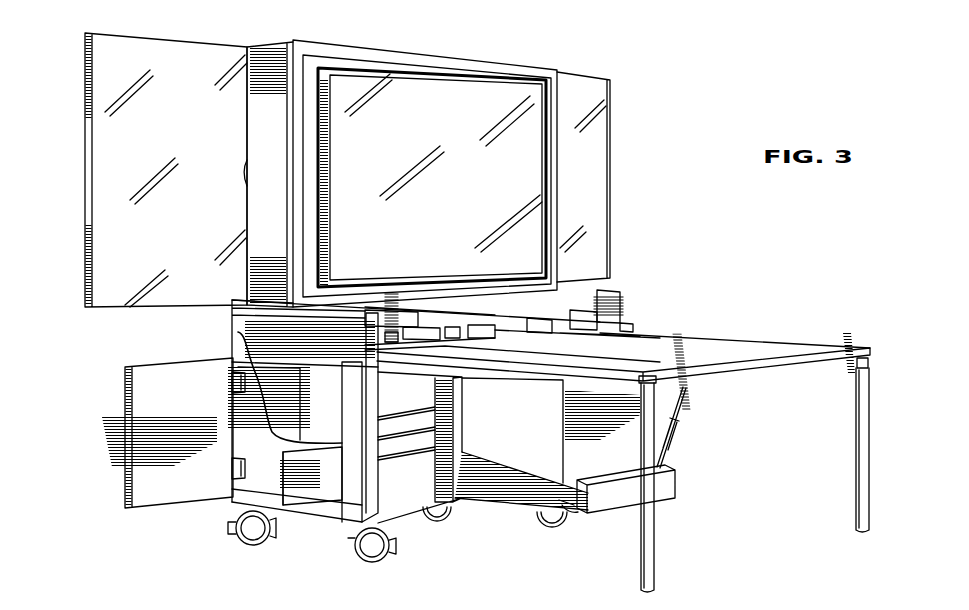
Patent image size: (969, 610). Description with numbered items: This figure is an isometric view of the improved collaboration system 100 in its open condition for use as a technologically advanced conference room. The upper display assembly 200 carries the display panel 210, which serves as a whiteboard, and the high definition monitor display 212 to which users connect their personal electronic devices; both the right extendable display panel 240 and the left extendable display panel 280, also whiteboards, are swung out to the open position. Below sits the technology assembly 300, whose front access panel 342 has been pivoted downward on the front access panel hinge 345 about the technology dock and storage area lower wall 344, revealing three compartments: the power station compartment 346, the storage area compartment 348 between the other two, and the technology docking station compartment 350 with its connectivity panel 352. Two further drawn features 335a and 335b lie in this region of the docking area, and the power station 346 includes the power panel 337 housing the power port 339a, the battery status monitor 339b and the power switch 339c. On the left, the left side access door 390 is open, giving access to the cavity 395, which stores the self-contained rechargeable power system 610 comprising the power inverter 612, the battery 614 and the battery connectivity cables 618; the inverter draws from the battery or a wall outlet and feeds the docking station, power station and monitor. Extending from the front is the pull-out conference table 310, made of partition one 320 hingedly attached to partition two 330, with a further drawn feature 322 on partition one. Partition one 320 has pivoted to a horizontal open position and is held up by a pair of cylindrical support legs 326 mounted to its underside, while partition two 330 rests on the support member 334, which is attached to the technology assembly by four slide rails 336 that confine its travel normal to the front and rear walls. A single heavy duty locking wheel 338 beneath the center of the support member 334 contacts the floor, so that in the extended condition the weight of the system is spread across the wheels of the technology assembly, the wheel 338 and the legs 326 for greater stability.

The improved collaboration system 100 is at (747, 86).
The display assembly 200 is at (654, 152).
The display panel 210 is at (308, 82).
The high definition monitor display 212 is at (487, 92).
The extendable display panel 240 is at (592, 95).
The extendable display panel 280 is at (125, 302).
The technology assembly 300 is at (805, 332).
The pull-out conference table 310 is at (513, 376).
The partition one 320 is at (754, 348).
The front table leg 322 is at (697, 363).
The support legs 326 is at (855, 503).
The partition two 330 is at (700, 342).
The support member 334 is at (540, 493).
The connector port 335a is at (590, 328).
The connector port 335b is at (575, 325).
The slide rails 336 is at (475, 483).
The power panel 337 is at (466, 328).
The locking wheel 338 is at (572, 513).
The power port 339a is at (453, 327).
The battery status monitor 339b is at (420, 328).
The power switch 339c is at (390, 333).
The front access panel 342 is at (573, 338).
The technology dock and storage area lower wall 344 is at (560, 355).
The front access panel hinge 345 is at (588, 325).
The power station compartment 346 is at (358, 334).
The storage area compartment 348 is at (545, 322).
The technology docking station compartment 350 is at (560, 322).
The connectivity panel 352 is at (605, 325).
The left side access door 390 is at (153, 483).
The cavity 395 is at (238, 332).
The self-contained rechargeable power system 610 is at (335, 483).
The power inverter 612 is at (300, 488).
The battery 614 is at (341, 418).
The battery connectivity cables 618 is at (268, 433).